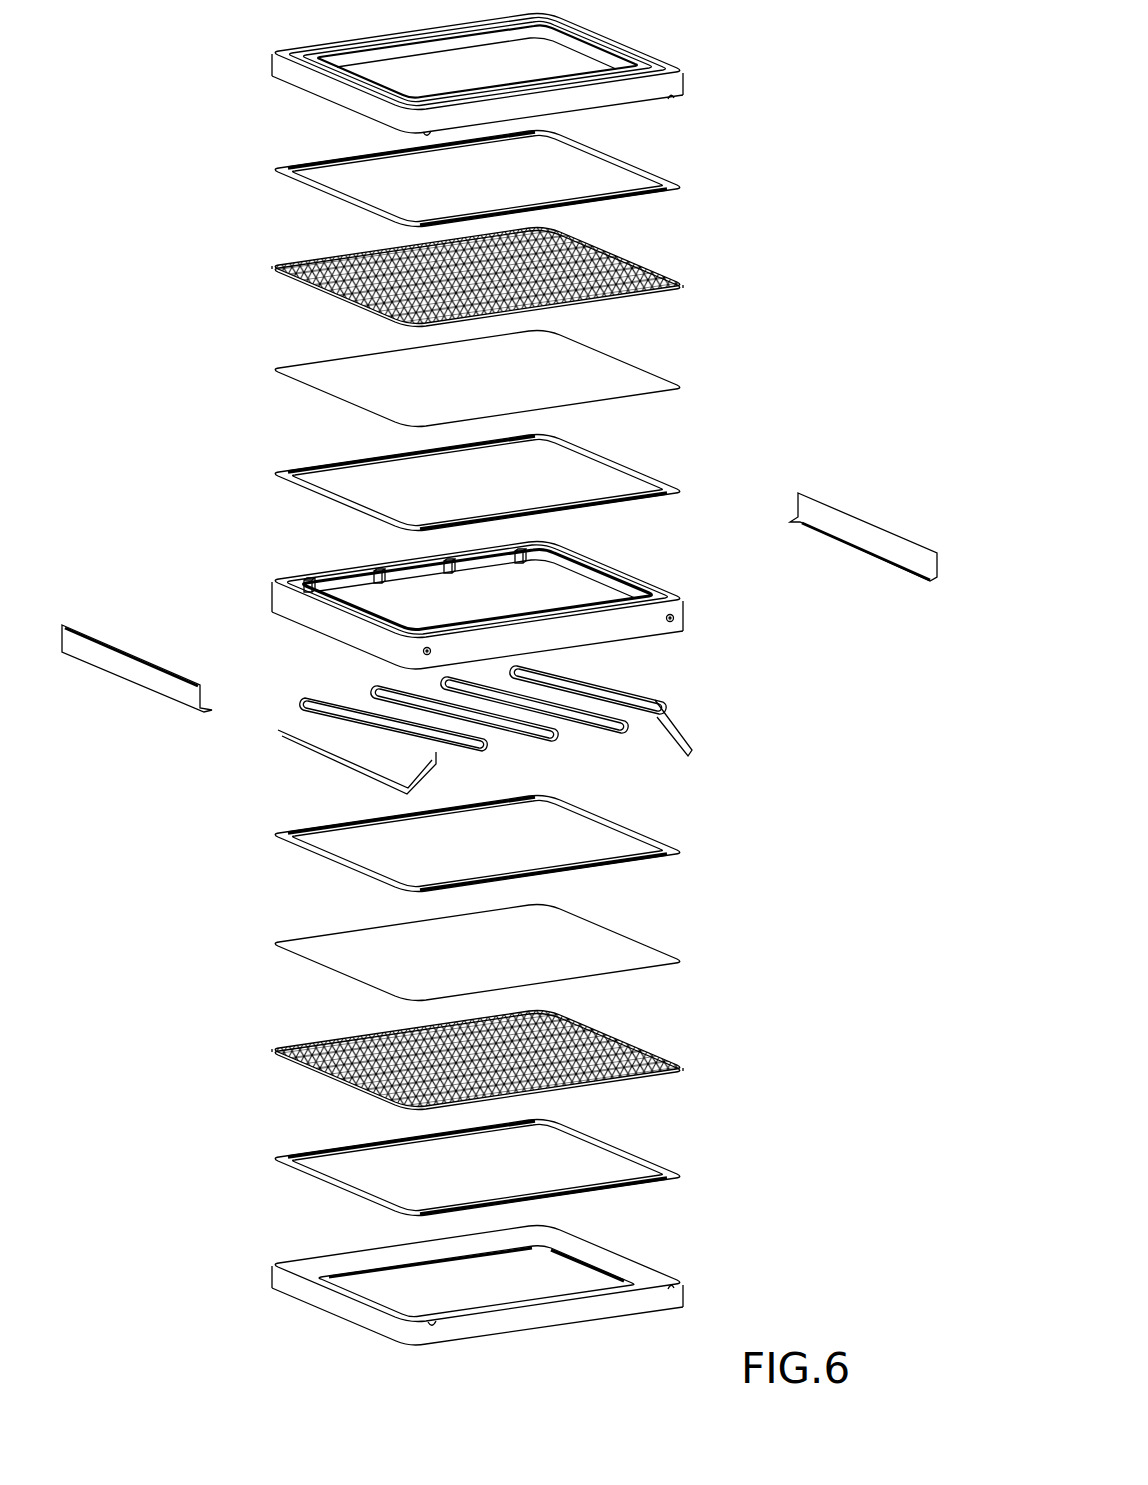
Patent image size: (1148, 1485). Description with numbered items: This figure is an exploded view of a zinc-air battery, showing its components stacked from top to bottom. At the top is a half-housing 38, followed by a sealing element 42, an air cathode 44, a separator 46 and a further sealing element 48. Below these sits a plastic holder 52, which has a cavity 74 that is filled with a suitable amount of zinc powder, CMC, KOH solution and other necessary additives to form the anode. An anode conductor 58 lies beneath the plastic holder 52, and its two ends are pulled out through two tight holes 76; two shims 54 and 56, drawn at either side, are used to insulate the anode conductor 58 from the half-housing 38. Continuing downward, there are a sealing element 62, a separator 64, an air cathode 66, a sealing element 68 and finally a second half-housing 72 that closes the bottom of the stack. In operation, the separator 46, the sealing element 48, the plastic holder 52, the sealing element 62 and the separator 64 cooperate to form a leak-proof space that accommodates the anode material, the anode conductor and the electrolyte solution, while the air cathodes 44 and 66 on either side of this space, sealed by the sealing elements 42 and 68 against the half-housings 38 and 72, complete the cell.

The half-housing 38 is at (683, 69).
The sealing element 42 is at (683, 186).
The air cathode 44 is at (683, 283).
The separator 46 is at (683, 386).
The sealing element 48 is at (683, 490).
The plastic holder 52 is at (683, 597).
The shim 54 is at (133, 652).
The shim 56 is at (828, 515).
The anode conductor 58 is at (668, 722).
The sealing element 62 is at (683, 851).
The separator 64 is at (683, 960).
The air cathode 66 is at (683, 1066).
The sealing element 68 is at (683, 1175).
The half-housing 72 is at (683, 1281).
The cavity 74 is at (410, 612).
The tight hole 76 is at (674, 617).